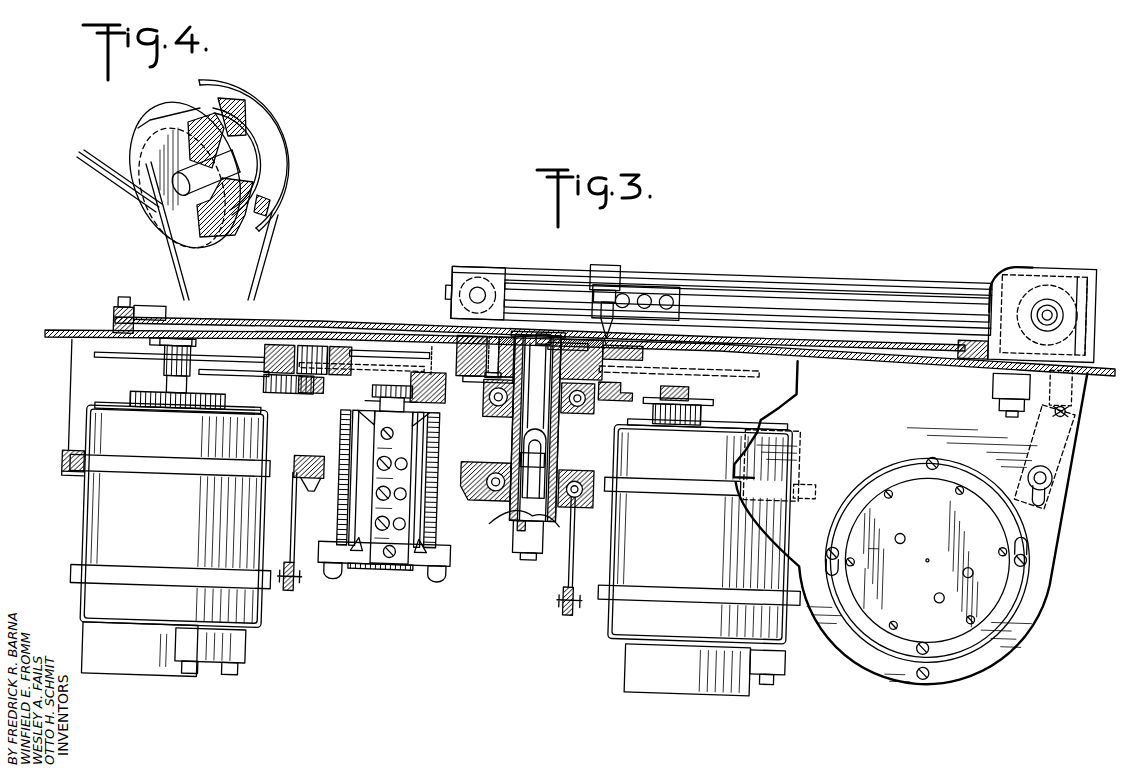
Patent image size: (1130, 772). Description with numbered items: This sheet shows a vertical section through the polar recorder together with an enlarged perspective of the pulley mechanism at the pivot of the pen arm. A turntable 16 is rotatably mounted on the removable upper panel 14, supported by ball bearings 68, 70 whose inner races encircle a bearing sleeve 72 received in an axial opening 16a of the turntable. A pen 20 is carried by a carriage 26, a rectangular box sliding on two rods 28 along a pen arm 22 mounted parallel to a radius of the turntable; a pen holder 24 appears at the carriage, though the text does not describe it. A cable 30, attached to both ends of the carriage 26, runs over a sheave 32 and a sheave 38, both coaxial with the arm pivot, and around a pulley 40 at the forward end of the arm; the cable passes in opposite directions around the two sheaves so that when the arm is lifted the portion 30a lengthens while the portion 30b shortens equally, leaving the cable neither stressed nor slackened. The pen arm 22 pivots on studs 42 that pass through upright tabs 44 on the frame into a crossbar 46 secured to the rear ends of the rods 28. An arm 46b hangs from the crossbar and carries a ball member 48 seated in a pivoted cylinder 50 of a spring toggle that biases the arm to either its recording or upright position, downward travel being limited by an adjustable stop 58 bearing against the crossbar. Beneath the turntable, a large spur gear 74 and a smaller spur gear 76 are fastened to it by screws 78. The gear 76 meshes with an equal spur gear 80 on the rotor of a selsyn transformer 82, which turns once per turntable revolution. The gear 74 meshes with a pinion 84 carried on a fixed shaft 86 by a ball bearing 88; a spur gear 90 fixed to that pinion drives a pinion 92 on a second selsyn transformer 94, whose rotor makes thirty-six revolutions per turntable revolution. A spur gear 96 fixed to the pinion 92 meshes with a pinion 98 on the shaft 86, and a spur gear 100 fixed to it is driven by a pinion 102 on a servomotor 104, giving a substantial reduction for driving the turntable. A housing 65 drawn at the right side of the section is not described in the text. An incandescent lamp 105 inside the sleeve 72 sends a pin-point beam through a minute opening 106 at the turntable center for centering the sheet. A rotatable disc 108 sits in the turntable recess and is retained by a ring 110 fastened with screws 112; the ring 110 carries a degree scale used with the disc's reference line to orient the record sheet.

In FIG. 3, the removable upper panel 14 is at (56, 330).
In FIG. 3, the turntable 16 is at (112, 328).
In FIG. 3, the axial opening (recess) 16a is at (158, 359).
In FIG. 3, the pen 20 is at (612, 332).
In FIG. 3, the pen arm 22 is at (510, 270).
In FIG. 3, the pen holder 24 is at (618, 278).
In FIG. 3, the carriage 26 is at (668, 286).
In FIG. 3, the rods (rails) 28 is at (732, 286).
In FIG. 3, the cable 30 is at (778, 303).
In FIG. 4, the cable portion 30a is at (270, 244).
In FIG. 4, the cable portion 30b is at (166, 246).
In FIG. 4, the sheave 32 is at (243, 96).
In FIG. 4, the sheave 38 is at (146, 134).
In FIG. 3, the pulley 40 is at (474, 270).
In FIG. 3, the studs 42 is at (1052, 290).
In FIG. 3, the upright tabs 44 is at (1058, 262).
In FIG. 3, the crossbar 46 is at (1006, 262).
In FIG. 3, the arm 46b is at (1074, 380).
In FIG. 3, the ball member 48 is at (1068, 398).
In FIG. 3, the cylinder 50 is at (1070, 426).
In FIG. 3, the adjustable stop 58 is at (990, 356).
In FIG. 3, the housing 65 is at (1015, 590).
In FIG. 3, the ball bearing 68 is at (504, 416).
In FIG. 3, the ball bearing 70 is at (505, 466).
In FIG. 3, the bearing sleeve 72 is at (556, 366).
In FIG. 3, the large spur gear 74 is at (460, 352).
In FIG. 3, the smaller spur gear 76 is at (482, 352).
In FIG. 3, the screws 78 is at (438, 380).
In FIG. 3, the spur gear 80 is at (671, 372).
In FIG. 3, the selsyn transformer 82 is at (701, 678).
In FIG. 3, the pinion 84 is at (341, 356).
In FIG. 3, the fixed shaft 86 is at (312, 356).
In FIG. 3, the ball bearing 88 is at (284, 356).
In FIG. 3, the spur gear 90 is at (370, 358).
In FIG. 3, the pinion 92 is at (166, 388).
In FIG. 3, the second selsyn transformer 94 is at (157, 676).
In FIG. 3, the spur gear 96 is at (104, 362).
In FIG. 3, the pinion 98 is at (338, 378).
In FIG. 3, the spur gear 100 is at (268, 396).
In FIG. 3, the pinion 102 is at (398, 404).
In FIG. 3, the servomotor 104 is at (397, 576).
In FIG. 3, the incandescent lamp 105 is at (536, 441).
In FIG. 3, the minute opening 106 is at (541, 336).
In FIG. 3, the rotatable disc 108 is at (220, 318).
In FIG. 3, the ring 110 is at (149, 320).
In FIG. 3, the screws 112 is at (122, 312).